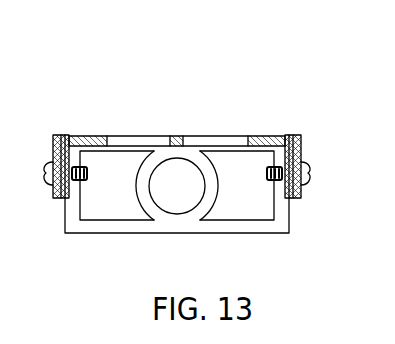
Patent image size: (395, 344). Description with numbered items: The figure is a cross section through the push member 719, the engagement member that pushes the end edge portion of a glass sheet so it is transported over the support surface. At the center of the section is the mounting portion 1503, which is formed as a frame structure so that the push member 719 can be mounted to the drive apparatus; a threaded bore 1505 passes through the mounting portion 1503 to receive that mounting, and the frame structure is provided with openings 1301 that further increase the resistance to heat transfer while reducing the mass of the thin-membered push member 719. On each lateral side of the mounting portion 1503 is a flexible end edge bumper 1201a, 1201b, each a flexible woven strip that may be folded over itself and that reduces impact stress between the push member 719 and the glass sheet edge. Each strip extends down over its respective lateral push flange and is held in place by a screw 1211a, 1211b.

The push member 719 is at (237, 113).
The flexible end edge bumper 1201a is at (57, 135).
The flexible end edge bumper 1201b is at (296, 135).
The screw 1211a is at (50, 183).
The screw 1211b is at (308, 185).
The opening 1301 is at (100, 205).
The mounting portion 1503 is at (262, 235).
The threaded bore 1505 is at (150, 185).